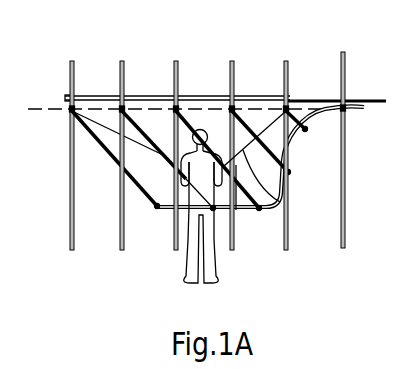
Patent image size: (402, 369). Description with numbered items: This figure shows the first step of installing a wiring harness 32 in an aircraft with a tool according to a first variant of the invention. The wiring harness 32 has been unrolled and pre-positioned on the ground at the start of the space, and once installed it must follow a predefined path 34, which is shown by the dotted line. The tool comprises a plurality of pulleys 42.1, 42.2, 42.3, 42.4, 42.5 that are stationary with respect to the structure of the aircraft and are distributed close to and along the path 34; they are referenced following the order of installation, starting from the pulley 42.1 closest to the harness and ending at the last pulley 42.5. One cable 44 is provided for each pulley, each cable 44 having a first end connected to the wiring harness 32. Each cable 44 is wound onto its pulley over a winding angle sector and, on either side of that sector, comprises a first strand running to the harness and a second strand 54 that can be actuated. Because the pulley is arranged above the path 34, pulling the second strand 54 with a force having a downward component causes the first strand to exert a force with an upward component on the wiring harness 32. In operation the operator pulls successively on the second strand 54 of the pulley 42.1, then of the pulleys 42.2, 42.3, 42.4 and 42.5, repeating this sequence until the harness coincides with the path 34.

The wiring harness 32 is at (300, 147).
The path 34 is at (58, 110).
The pulley 42.1 is at (285, 95).
The pulley 42.2 is at (232, 97).
The pulley 42.3 is at (176, 93).
The pulley 42.4 is at (122, 95).
The pulley 42.5 is at (72, 93).
The cable 44 is at (144, 188).
The second strand 54 is at (131, 178).